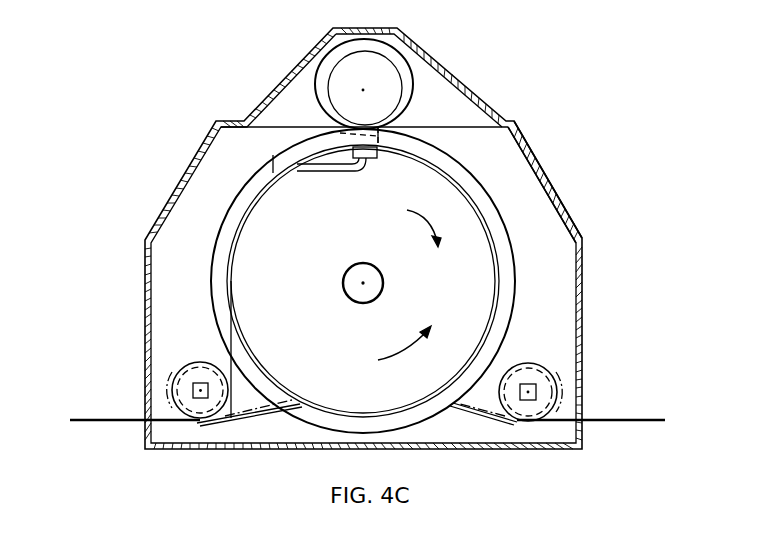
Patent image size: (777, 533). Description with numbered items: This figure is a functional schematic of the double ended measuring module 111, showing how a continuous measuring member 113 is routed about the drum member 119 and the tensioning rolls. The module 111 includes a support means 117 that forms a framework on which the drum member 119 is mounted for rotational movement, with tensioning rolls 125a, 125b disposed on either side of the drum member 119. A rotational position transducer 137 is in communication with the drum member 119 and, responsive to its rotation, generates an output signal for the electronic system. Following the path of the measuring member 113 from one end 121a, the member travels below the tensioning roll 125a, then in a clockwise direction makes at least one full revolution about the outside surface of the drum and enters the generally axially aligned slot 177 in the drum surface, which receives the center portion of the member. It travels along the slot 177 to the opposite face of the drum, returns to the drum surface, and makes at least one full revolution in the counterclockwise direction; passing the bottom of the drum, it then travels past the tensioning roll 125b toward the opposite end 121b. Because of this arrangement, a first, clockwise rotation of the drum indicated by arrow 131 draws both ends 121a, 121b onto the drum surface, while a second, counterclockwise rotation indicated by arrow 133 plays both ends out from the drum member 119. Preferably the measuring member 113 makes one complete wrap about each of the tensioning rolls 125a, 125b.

The double ended measuring module 111 is at (170, 200).
The measuring member 113 is at (510, 296).
The support means 117 is at (545, 186).
The drum member 119 is at (295, 276).
The end of the measuring member 121a is at (640, 419).
The end of the measuring member 121b is at (92, 418).
The tensioning roll 125a is at (547, 381).
The tensioning roll 125b is at (196, 368).
The arrow 131 is at (423, 227).
The arrow 133 is at (392, 358).
The rotational position transducer 137 is at (412, 95).
The slot 177 is at (372, 158).